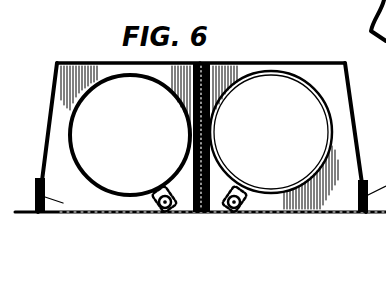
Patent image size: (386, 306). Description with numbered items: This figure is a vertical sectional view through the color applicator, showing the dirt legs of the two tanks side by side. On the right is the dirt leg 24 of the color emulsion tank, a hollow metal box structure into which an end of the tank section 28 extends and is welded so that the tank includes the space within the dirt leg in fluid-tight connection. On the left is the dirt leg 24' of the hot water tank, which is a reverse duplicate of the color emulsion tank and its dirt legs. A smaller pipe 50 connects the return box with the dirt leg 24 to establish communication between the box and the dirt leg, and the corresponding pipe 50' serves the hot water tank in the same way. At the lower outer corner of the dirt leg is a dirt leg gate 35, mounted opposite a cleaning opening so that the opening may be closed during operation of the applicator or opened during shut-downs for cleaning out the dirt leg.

The dirt leg 24' is at (119, 127).
The dirt leg 24 is at (293, 123).
The tank section 28 is at (316, 101).
The pipe 50' is at (160, 186).
The pipe 50 is at (245, 186).
The dirt leg gate 35 is at (37, 201).